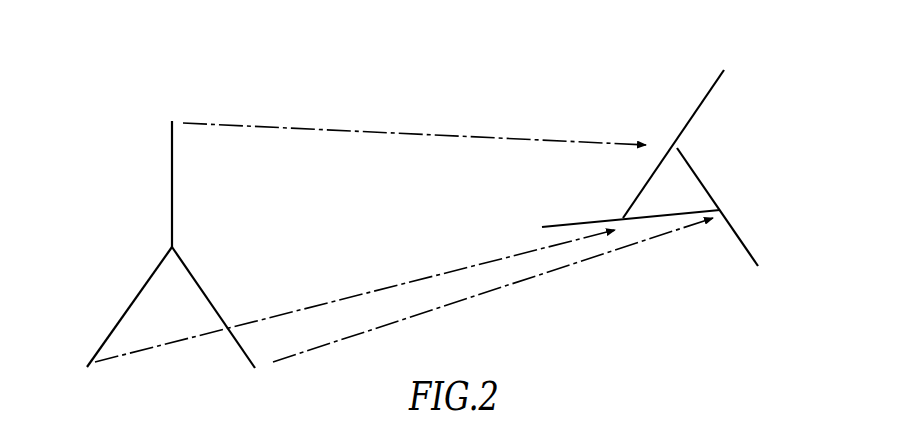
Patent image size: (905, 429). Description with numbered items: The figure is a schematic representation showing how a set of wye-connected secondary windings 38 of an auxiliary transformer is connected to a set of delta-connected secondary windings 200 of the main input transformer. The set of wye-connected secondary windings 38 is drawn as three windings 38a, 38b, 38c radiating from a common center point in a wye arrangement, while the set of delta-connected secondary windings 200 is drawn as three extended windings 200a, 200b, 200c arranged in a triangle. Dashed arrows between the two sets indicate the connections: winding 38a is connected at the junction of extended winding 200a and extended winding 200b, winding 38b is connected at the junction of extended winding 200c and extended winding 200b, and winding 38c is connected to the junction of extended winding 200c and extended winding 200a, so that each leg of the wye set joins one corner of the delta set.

The set of wye-connected secondary windings 38 is at (173, 220).
The winding 38a is at (174, 176).
The winding 38b is at (203, 282).
The winding 38c is at (146, 280).
The set of delta-connected secondary windings 200 is at (651, 147).
The extended winding 200a is at (700, 102).
The extended winding 200b is at (727, 218).
The extended winding 200c is at (560, 222).